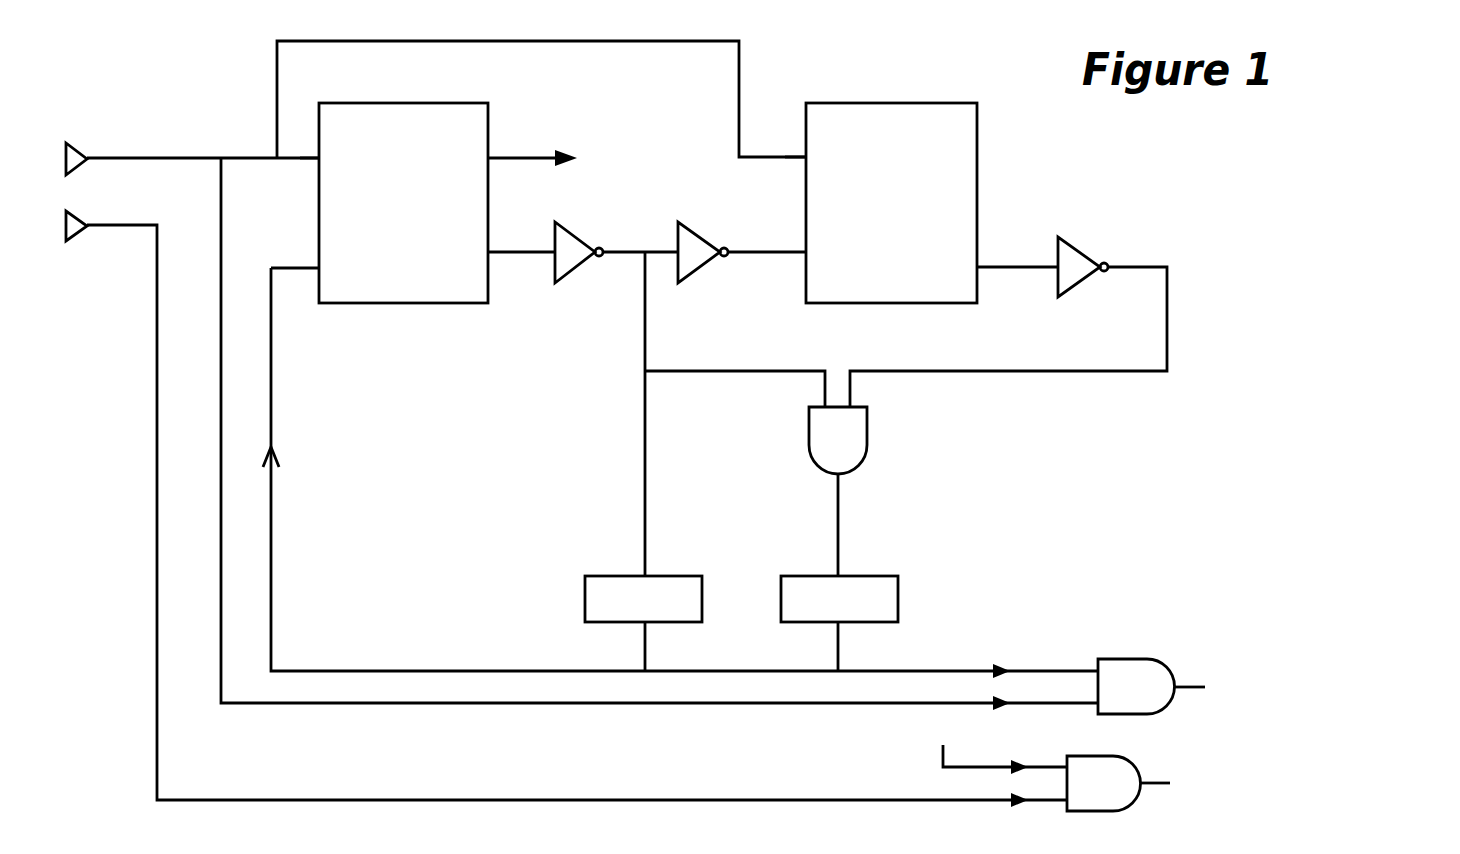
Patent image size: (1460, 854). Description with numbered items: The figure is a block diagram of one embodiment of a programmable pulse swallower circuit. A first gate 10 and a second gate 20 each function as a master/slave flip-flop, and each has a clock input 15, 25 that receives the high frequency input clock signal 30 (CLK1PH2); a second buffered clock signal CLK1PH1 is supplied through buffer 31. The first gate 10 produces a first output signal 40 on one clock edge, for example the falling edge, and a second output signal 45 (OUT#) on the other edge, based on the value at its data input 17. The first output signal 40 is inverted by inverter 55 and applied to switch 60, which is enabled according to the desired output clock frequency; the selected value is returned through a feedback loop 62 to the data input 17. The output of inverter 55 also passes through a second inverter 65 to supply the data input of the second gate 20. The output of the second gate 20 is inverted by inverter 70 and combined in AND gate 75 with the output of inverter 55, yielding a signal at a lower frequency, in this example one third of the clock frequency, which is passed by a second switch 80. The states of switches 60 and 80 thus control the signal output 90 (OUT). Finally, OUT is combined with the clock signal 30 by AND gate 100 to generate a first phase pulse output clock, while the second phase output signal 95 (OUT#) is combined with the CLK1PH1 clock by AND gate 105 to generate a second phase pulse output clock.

The first gate 10 is at (450, 103).
The clock input 15 is at (317, 156).
The data input 17 is at (318, 267).
The second gate 20 is at (917, 104).
The clock input 25 is at (805, 156).
The high frequency input clock signal 30 is at (66, 150).
The clock buffer CLK1PH1 31 is at (66, 226).
The first output signal 40 is at (490, 252).
The second output signal 45 is at (491, 156).
The inverter 55 is at (572, 244).
The switch 60 is at (700, 595).
The feedback loop 62 is at (272, 431).
The second inverter 65 is at (695, 243).
The inverter 70 is at (1073, 258).
The AND gate 75 is at (852, 438).
The second switch 80 is at (898, 592).
The signal output 90 is at (974, 666).
The second phase output signal 95 is at (941, 752).
The AND gate 100 is at (1156, 660).
The AND gate 105 is at (1128, 774).